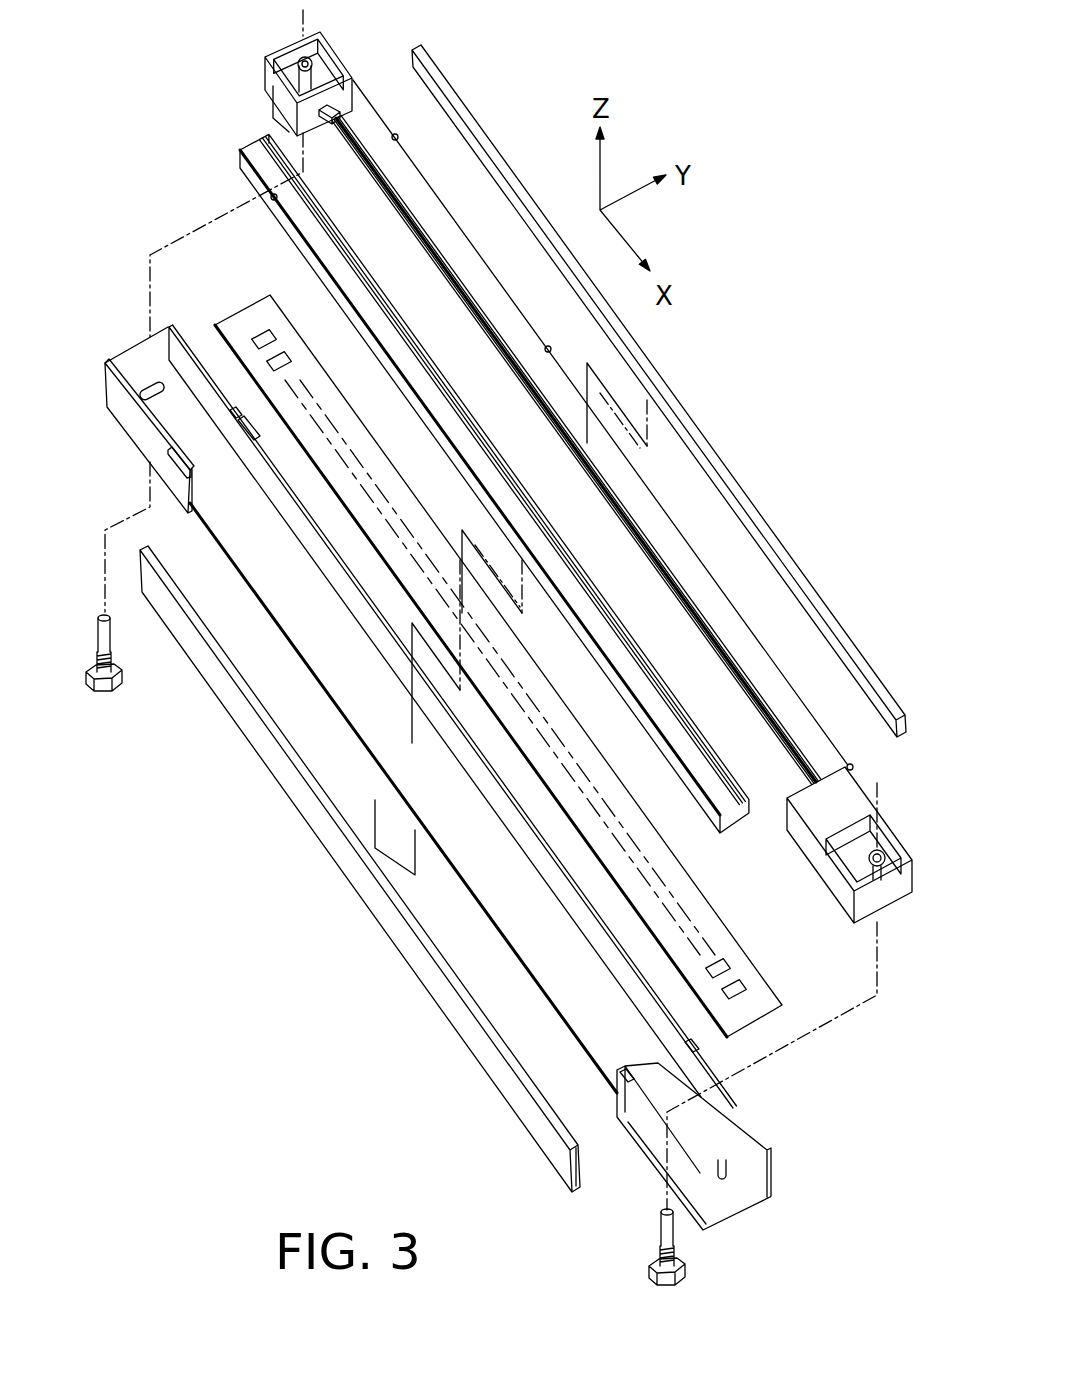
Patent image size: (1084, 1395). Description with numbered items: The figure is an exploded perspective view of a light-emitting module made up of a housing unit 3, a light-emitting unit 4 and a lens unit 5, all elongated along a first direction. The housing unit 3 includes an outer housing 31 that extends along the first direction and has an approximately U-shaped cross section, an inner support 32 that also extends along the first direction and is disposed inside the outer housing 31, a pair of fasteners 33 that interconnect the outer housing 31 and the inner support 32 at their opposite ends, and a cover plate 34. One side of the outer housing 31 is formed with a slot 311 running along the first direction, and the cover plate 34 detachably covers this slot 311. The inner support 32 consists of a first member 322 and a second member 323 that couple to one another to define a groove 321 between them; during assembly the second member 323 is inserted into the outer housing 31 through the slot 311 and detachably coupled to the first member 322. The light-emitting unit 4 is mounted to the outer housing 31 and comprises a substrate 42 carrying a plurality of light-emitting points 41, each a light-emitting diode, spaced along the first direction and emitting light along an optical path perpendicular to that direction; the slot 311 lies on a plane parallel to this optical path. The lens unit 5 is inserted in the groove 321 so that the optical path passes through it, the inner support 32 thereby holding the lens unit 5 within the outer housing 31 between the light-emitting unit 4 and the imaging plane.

The housing unit 3 is at (737, 1212).
The light-emitting unit 4 is at (537, 694).
The light-emitting points 41 is at (262, 332).
The substrate 42 is at (766, 1018).
The lens unit 5 is at (741, 488).
The outer housing 31 is at (122, 432).
The slot 311 is at (290, 593).
The inner support 32 is at (856, 788).
The groove 321 is at (597, 503).
The first member 322 is at (750, 652).
The second member 323 is at (390, 253).
The fasteners 33 is at (110, 634).
The cover plate 34 is at (300, 797).